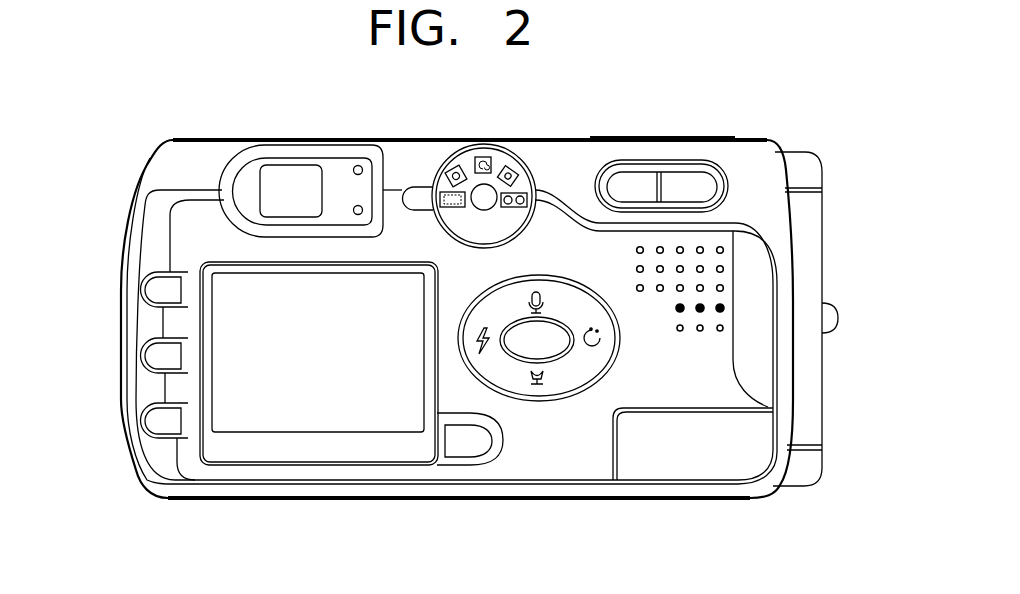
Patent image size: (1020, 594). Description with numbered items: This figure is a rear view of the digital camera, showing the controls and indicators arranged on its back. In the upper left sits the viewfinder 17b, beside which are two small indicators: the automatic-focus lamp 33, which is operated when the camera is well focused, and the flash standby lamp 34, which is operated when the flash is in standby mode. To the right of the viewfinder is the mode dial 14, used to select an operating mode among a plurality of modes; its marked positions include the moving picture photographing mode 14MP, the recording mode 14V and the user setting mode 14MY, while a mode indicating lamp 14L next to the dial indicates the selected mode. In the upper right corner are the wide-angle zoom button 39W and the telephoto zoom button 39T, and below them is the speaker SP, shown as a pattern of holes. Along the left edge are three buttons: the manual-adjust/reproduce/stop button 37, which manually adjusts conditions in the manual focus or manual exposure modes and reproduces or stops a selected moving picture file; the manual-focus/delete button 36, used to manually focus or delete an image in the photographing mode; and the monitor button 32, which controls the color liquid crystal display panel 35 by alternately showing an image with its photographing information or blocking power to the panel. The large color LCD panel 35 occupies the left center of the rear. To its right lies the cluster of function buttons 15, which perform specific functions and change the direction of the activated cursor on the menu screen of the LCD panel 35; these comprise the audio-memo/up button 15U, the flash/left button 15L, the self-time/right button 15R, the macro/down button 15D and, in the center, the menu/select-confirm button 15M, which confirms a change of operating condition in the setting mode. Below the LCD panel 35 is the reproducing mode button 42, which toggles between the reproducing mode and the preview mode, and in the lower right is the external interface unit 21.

The viewfinder 17b is at (291, 175).
The automatic-focus lamp 33 is at (354, 167).
The flash standby lamp 34 is at (362, 207).
The mode indicating lamp 14L is at (419, 193).
The mode dial 14 is at (490, 145).
The moving picture photographing mode 14MP is at (516, 165).
The recording mode 14V is at (518, 192).
The user setting mode 14MY is at (517, 228).
The wide-angle zoom button 39W is at (627, 187).
The telephoto zoom button 39T is at (692, 182).
The speaker SP is at (724, 308).
The manual-adjust/reproduce/stop button 37 is at (155, 292).
The manual-focus/delete button 36 is at (155, 357).
The monitor button 32 is at (160, 422).
The function buttons 15 is at (510, 410).
The audio-memo/up button 15U is at (527, 300).
The flash/left button 15L is at (478, 347).
The self-time/right button 15R is at (601, 338).
The menu/select-confirm button 15M is at (556, 346).
The macro/down button 15D is at (546, 380).
The color liquid crystal display (LCD) panel 35 is at (307, 413).
The reproducing mode button 42 is at (461, 447).
The external interface unit 21 is at (736, 460).